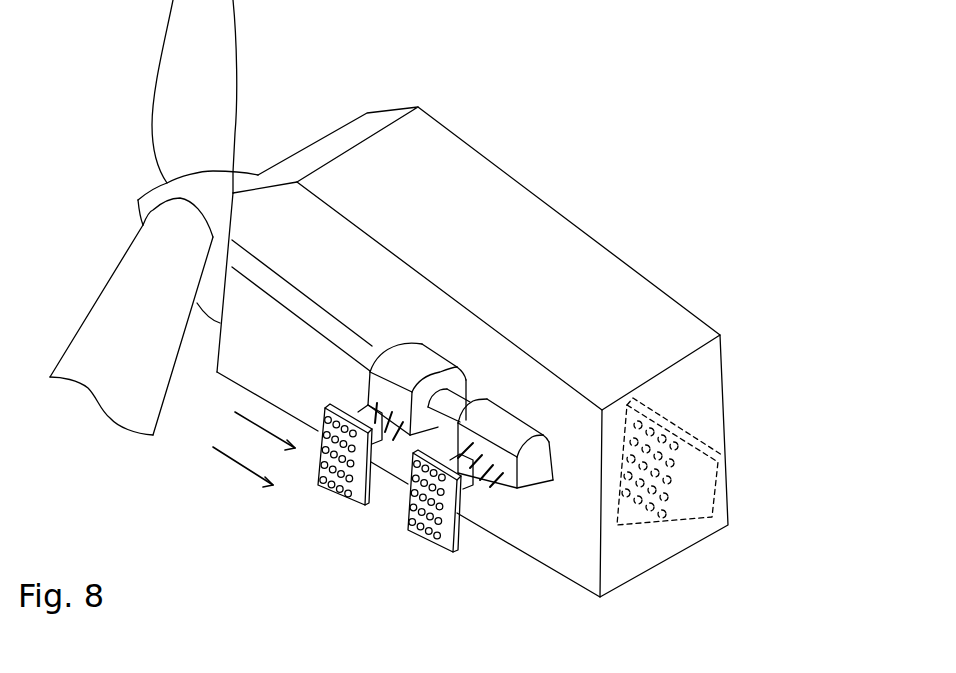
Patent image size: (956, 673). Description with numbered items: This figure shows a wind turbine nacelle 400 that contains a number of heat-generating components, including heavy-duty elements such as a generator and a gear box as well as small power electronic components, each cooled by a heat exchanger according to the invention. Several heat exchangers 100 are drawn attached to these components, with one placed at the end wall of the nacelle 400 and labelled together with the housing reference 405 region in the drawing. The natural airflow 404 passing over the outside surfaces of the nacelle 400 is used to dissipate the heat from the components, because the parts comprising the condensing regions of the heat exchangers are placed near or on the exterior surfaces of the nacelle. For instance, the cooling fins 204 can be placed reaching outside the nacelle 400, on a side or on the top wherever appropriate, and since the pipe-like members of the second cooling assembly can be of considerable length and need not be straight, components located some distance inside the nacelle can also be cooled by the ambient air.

The module 100 is at (325, 493).
The cooling fins 204 is at (427, 542).
The wind turbine nacelle 400 is at (453, 185).
The natural airflow 404 is at (233, 459).
The nacelle housing 405 is at (577, 545).